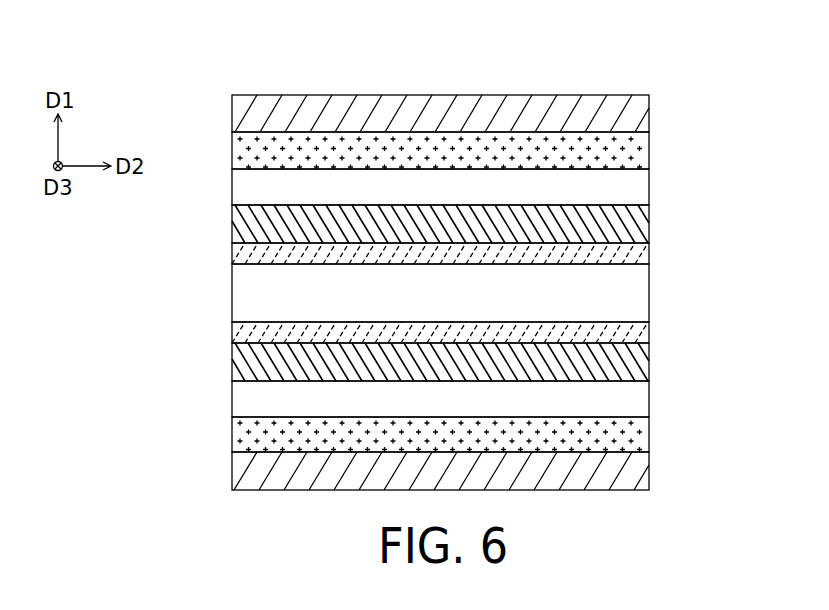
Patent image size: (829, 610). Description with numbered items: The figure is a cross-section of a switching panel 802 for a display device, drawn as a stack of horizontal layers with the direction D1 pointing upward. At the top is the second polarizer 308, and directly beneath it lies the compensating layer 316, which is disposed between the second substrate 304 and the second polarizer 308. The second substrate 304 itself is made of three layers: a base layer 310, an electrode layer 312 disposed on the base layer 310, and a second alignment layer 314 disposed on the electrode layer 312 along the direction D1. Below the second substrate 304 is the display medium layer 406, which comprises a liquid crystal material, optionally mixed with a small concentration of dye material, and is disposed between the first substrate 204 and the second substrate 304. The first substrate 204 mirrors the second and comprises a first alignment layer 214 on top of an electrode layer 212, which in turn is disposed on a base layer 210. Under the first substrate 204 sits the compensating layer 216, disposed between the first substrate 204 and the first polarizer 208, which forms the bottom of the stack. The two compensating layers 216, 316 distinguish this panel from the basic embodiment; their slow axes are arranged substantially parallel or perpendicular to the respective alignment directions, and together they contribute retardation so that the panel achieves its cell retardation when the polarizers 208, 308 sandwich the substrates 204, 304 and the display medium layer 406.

The switching panel 802 is at (230, 72).
The second polarizer 308 is at (640, 110).
The compensating layer 316 is at (638, 148).
The base layer 310 is at (638, 185).
The electrode layer 312 is at (640, 222).
The second alignment layer 314 is at (477, 250).
The second substrate 304 is at (505, 213).
The display medium layer 406 is at (638, 292).
The first alignment layer 214 is at (640, 330).
The electrode layer 212 is at (638, 360).
The base layer 210 is at (477, 398).
The first substrate 204 is at (505, 363).
The compensating layer 216 is at (638, 433).
The first polarizer 208 is at (638, 471).